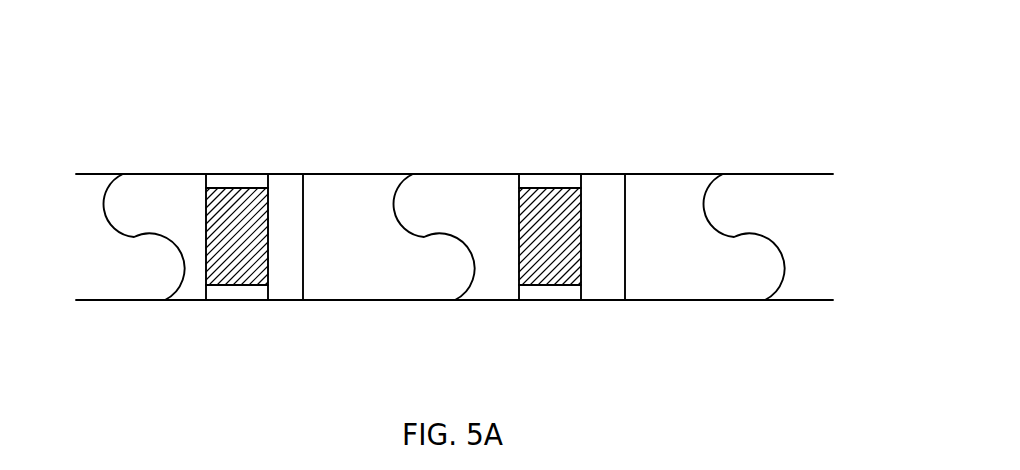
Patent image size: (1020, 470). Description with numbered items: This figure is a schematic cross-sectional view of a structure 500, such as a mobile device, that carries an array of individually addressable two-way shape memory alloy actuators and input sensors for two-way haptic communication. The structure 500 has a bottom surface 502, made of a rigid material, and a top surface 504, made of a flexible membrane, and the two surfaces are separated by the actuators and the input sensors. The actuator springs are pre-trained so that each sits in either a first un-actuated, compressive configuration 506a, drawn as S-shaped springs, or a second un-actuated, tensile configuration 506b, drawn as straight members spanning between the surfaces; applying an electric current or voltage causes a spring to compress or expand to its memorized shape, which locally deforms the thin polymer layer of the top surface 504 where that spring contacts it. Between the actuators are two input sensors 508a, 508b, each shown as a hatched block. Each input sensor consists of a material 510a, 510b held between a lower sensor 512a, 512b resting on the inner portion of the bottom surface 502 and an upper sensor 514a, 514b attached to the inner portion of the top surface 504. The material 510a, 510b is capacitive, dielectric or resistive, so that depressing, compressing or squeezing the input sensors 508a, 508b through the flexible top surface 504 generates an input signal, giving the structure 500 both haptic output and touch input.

The structure 500 is at (441, 194).
The bottom surface 502 is at (454, 338).
The top surface 504 is at (454, 132).
The first un-actuated configuration 506a is at (417, 237).
The second un-actuated configuration 506b is at (491, 237).
The input sensor 508a is at (193, 209).
The input sensor 508b is at (507, 208).
The material 510a is at (191, 265).
The material 510b is at (579, 268).
The lower sensor 512a is at (224, 321).
The lower sensor 512b is at (533, 319).
The upper sensor 514a is at (230, 150).
The upper sensor 514b is at (542, 150).